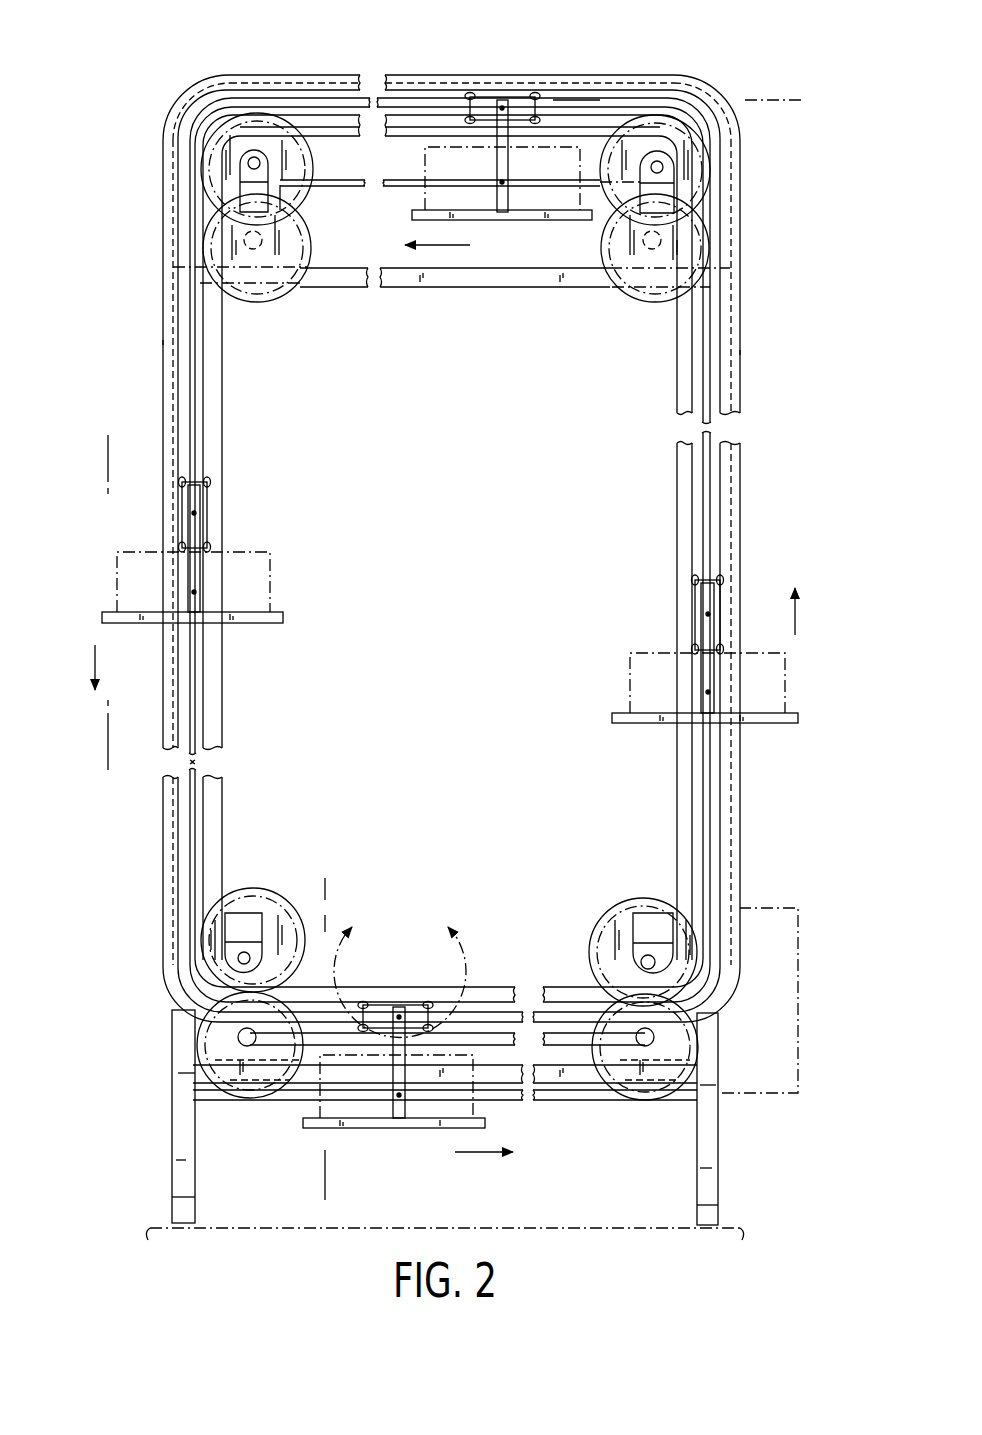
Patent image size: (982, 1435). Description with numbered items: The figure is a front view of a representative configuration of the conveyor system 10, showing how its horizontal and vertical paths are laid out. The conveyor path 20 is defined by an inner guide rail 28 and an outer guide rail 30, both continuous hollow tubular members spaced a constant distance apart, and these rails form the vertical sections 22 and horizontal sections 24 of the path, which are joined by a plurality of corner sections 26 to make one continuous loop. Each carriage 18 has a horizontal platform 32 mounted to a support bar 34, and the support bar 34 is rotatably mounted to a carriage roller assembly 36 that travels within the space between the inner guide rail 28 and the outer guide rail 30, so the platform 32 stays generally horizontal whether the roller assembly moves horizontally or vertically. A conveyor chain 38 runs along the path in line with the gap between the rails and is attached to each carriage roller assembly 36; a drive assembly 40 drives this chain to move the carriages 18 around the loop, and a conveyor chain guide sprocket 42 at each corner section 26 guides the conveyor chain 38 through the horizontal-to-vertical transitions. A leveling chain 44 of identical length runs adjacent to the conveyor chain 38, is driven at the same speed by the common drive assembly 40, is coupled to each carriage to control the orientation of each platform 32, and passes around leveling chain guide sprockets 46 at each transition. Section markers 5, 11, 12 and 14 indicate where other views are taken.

The section line for FIG. 5 is at (400, 970).
The conveyor system 10 is at (770, 325).
The section line for FIG. 11 is at (563, 98).
The section line for FIG. 12 is at (105, 438).
The section line for FIG. 14 is at (295, 890).
The carriage 18 is at (505, 1130).
The conveyor path 20 is at (752, 527).
The vertical section 22 is at (243, 685).
The horizontal section 24 is at (447, 70).
The corner section 26 is at (185, 85).
The inner guide rail 28 is at (223, 430).
The outer guide rail 30 is at (164, 337).
The horizontal platform 32 is at (500, 221).
The support bar 34 is at (395, 1115).
The carriage roller assembly 36 is at (198, 492).
The conveyor chain 38 is at (312, 103).
The drive assembly 40 is at (772, 900).
The conveyor chain guide sprocket 42 is at (633, 148).
The leveling chain 44 is at (340, 187).
The leveling chain guide sprocket 46 is at (283, 268).